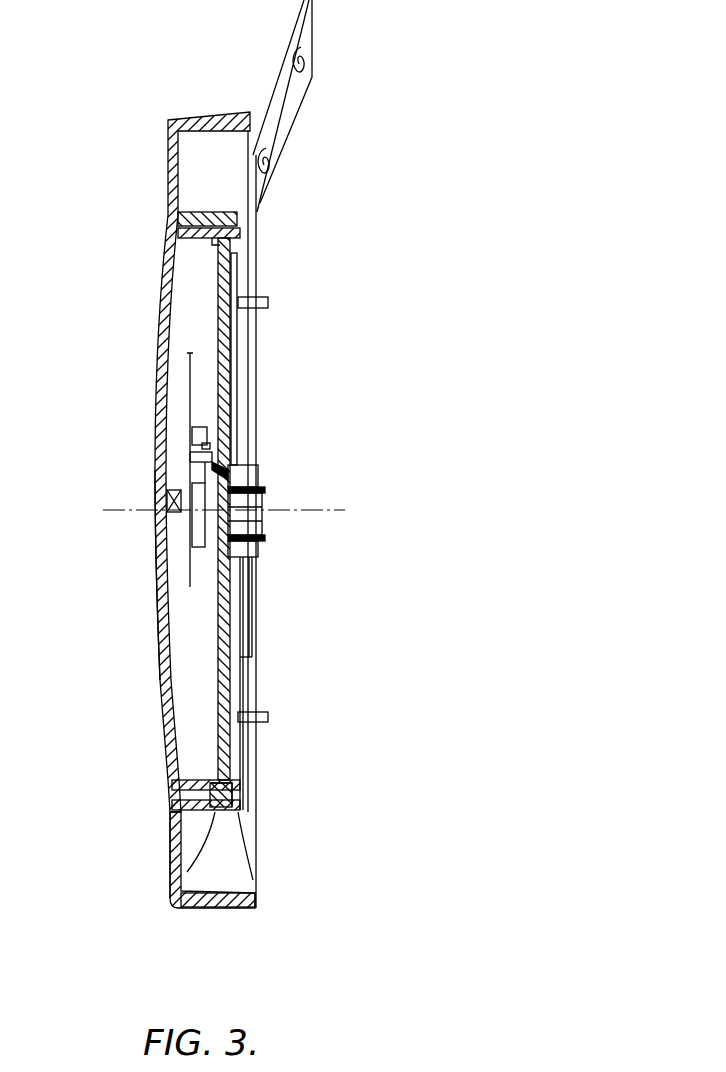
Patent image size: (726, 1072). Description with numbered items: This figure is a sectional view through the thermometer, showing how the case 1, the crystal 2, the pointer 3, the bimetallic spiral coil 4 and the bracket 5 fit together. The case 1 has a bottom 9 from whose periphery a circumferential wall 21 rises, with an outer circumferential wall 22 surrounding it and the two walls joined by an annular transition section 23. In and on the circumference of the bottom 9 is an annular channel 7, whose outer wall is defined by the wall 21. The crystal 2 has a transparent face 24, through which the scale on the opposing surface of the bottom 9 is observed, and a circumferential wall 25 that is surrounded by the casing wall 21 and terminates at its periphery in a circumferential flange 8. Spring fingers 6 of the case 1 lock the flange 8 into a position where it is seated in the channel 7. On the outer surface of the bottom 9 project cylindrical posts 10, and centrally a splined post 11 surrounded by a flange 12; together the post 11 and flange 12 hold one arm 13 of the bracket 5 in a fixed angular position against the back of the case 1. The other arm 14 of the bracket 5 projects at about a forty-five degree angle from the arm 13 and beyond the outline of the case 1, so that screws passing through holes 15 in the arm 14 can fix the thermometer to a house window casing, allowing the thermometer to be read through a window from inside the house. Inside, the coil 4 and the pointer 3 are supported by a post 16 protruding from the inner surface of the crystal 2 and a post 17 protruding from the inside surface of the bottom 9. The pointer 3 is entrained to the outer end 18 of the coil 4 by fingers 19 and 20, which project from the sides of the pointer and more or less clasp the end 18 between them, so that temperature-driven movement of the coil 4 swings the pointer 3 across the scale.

The case 1 is at (250, 657).
The crystal 2 is at (157, 633).
The pointer 3 is at (191, 352).
The bimetallic spiral coil 4 is at (206, 552).
The bracket 5 is at (258, 238).
The spring fingers 6 is at (190, 217).
The annular channel 7 is at (212, 243).
The circumferential flange 8 is at (236, 222).
The bottom 9 is at (218, 697).
The cylindrical posts 10 is at (269, 300).
The splined post 11 is at (258, 497).
The flange 12 is at (250, 641).
The arm 13 is at (259, 355).
The arm 14 is at (298, 122).
The holes 15 is at (302, 58).
The post 16 is at (180, 497).
The post 17 is at (238, 466).
The outer end 18 is at (192, 430).
The finger 19 is at (233, 457).
The finger 20 is at (212, 446).
The circumferential wall 21 is at (185, 870).
The outer circumferential wall 22 is at (195, 905).
The annular transition section 23 is at (170, 847).
The transparent face 24 is at (155, 543).
The circumferential wall 25 is at (210, 786).